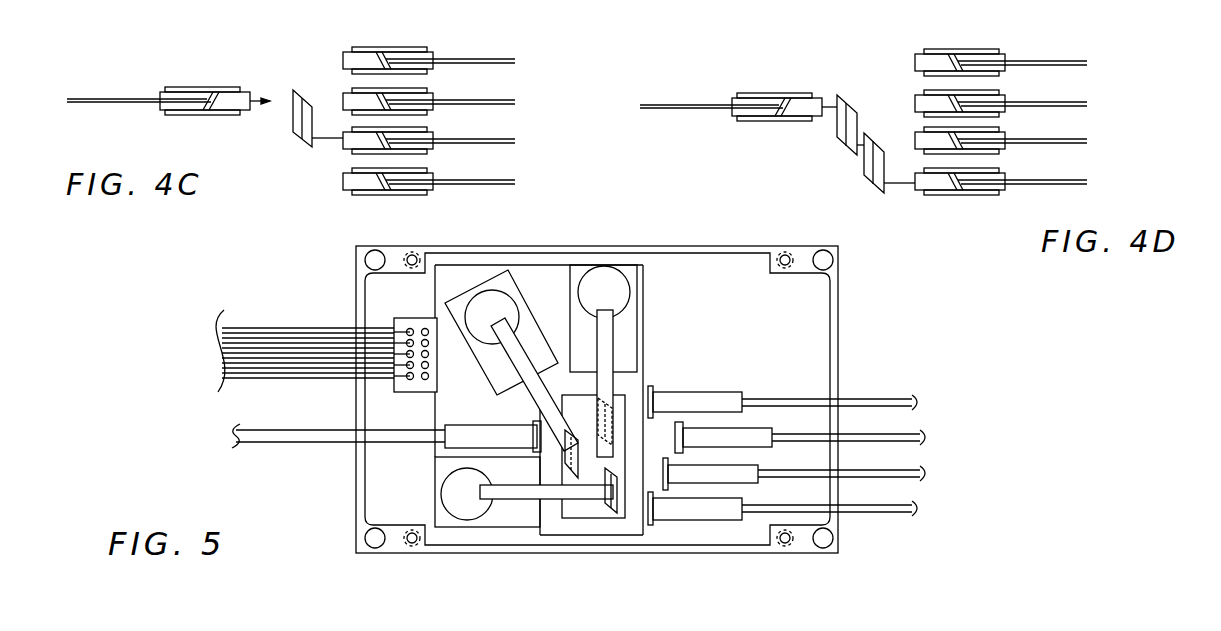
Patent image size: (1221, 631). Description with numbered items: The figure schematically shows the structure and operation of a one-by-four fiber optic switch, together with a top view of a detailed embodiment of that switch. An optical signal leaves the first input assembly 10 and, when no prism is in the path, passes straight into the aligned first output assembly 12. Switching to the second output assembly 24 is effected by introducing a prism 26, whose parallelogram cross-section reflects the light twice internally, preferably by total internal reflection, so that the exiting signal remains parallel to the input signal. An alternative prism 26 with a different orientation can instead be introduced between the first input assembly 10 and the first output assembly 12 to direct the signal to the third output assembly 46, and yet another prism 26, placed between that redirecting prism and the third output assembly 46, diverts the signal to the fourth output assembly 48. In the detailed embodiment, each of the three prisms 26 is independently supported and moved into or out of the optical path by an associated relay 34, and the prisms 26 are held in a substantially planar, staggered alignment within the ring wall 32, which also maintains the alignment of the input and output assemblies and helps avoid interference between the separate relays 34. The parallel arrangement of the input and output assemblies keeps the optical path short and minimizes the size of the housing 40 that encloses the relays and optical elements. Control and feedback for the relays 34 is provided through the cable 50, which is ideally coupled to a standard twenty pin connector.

In FIG. 4C, the first input assembly 10 is at (196, 88).
In FIG. 5, the first input assembly 10 is at (490, 432).
In FIG. 4C, the first output assembly 12 is at (430, 90).
In FIG. 4D, the first output assembly 12 is at (1000, 92).
In FIG. 5, the first output assembly 12 is at (762, 430).
In FIG. 4C, the second output assembly 24 is at (429, 42).
In FIG. 4D, the second output assembly 24 is at (1001, 47).
In FIG. 5, the second output assembly 24 is at (782, 389).
In FIG. 4C, the prism 26 is at (296, 134).
In FIG. 4D, the prism 26 is at (841, 142).
In FIG. 5, the prism 26 is at (563, 465).
In FIG. 5, the ring wall 32 is at (615, 532).
In FIG. 5, the relay 34 is at (405, 470).
In FIG. 5, the housing 40 is at (838, 311).
In FIG. 4C, the third output assembly 46 is at (430, 130).
In FIG. 4D, the third output assembly 46 is at (1003, 130).
In FIG. 5, the third output assembly 46 is at (758, 465).
In FIG. 4D, the fourth output assembly 48 is at (1003, 170).
In FIG. 5, the fourth output assembly 48 is at (745, 500).
In FIG. 5, the cable 50 is at (326, 337).